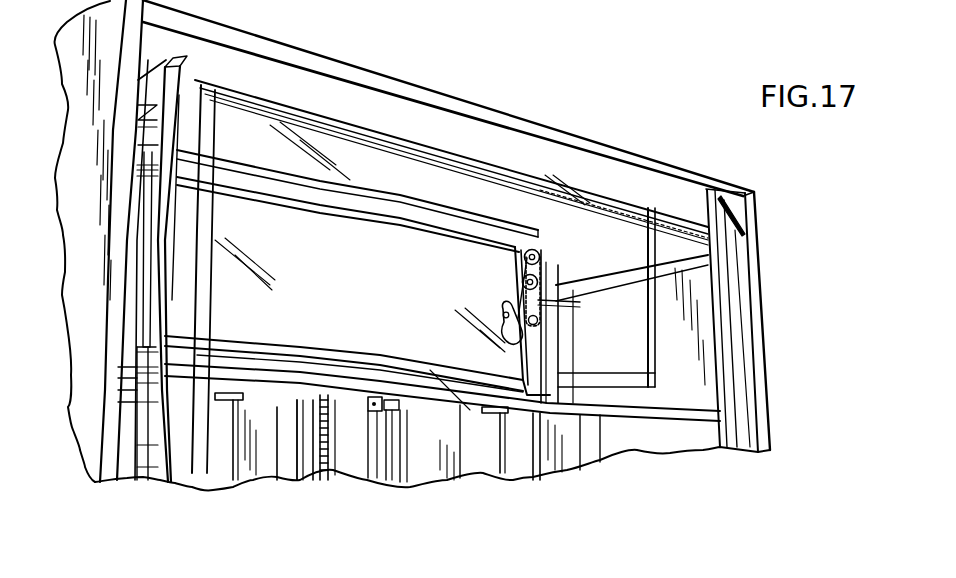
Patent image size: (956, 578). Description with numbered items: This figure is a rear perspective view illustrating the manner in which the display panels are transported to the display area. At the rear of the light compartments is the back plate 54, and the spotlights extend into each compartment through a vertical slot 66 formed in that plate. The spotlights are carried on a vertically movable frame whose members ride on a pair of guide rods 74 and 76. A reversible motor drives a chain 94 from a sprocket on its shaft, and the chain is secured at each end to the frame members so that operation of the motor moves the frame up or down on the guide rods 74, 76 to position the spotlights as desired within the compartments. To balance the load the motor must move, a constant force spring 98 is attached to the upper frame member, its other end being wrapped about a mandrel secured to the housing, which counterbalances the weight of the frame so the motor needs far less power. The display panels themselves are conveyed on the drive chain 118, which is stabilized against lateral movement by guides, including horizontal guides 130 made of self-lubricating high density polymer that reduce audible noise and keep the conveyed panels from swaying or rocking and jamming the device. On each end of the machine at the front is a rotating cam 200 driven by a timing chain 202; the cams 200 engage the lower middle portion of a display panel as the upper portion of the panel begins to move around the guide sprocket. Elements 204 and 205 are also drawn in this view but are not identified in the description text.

The back plate 54 is at (467, 467).
The vertical slot 66 is at (297, 462).
The guide rod 74 is at (500, 453).
The guide rod 76 is at (233, 460).
The chain 94 is at (330, 452).
The constant force spring 98 is at (387, 453).
The drive chain 118 is at (695, 213).
The horizontal guide 130 is at (678, 200).
The rotating cam 200 is at (513, 335).
The timing chain 202 is at (580, 304).
The glass door frame 204 is at (452, 387).
The side panel 205 is at (663, 353).